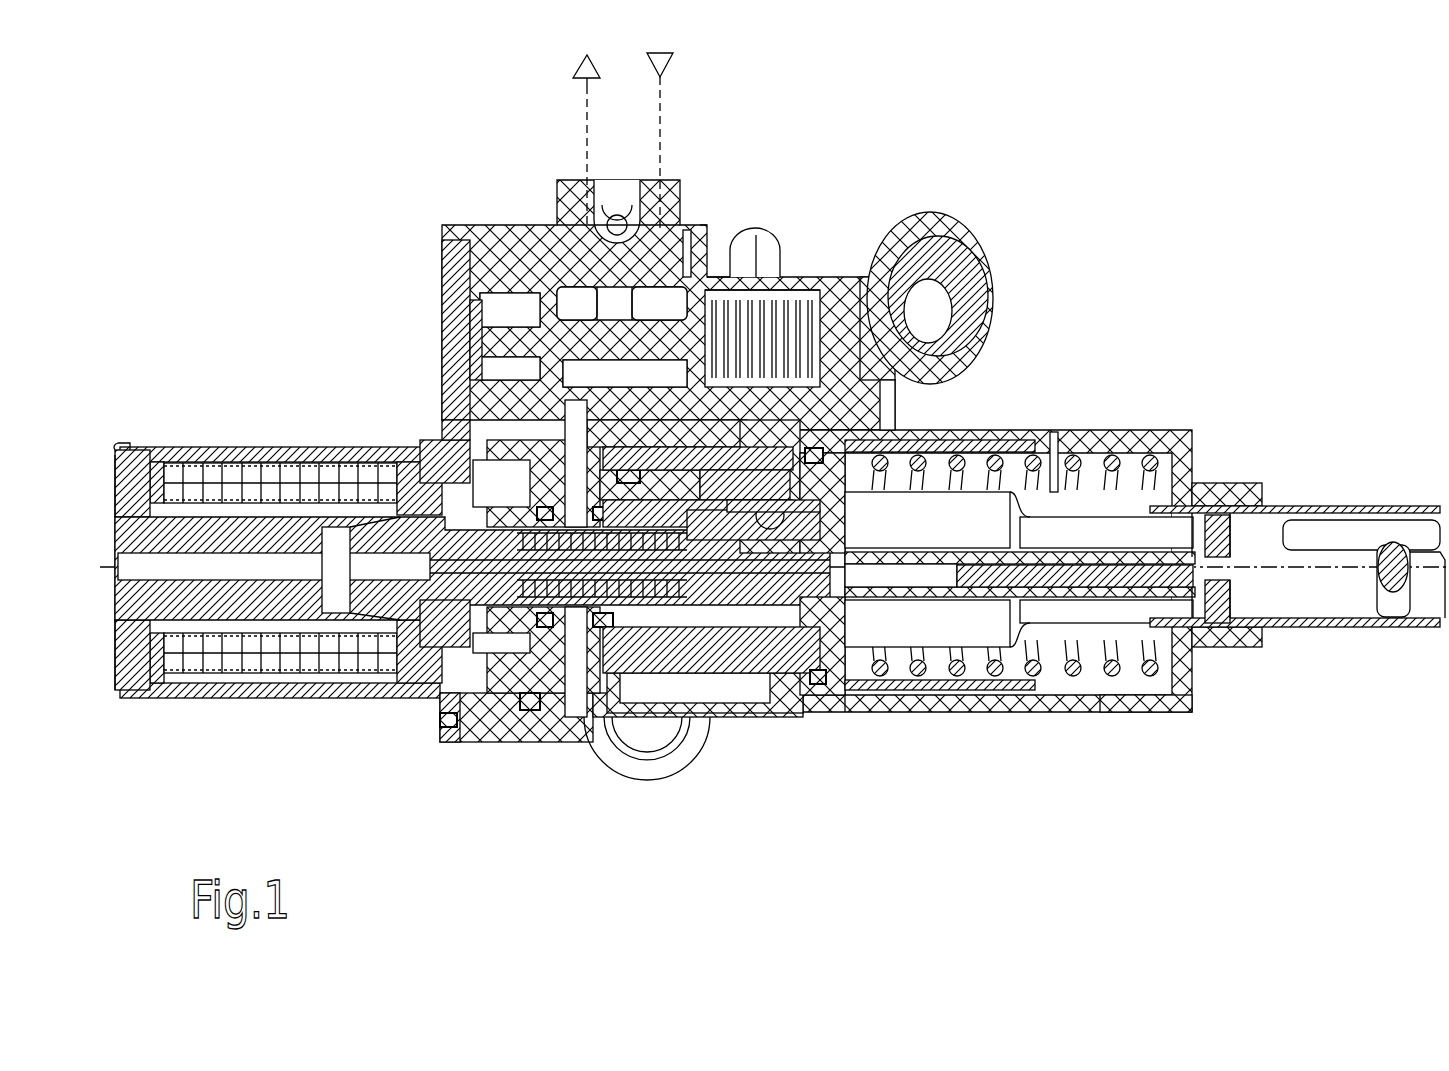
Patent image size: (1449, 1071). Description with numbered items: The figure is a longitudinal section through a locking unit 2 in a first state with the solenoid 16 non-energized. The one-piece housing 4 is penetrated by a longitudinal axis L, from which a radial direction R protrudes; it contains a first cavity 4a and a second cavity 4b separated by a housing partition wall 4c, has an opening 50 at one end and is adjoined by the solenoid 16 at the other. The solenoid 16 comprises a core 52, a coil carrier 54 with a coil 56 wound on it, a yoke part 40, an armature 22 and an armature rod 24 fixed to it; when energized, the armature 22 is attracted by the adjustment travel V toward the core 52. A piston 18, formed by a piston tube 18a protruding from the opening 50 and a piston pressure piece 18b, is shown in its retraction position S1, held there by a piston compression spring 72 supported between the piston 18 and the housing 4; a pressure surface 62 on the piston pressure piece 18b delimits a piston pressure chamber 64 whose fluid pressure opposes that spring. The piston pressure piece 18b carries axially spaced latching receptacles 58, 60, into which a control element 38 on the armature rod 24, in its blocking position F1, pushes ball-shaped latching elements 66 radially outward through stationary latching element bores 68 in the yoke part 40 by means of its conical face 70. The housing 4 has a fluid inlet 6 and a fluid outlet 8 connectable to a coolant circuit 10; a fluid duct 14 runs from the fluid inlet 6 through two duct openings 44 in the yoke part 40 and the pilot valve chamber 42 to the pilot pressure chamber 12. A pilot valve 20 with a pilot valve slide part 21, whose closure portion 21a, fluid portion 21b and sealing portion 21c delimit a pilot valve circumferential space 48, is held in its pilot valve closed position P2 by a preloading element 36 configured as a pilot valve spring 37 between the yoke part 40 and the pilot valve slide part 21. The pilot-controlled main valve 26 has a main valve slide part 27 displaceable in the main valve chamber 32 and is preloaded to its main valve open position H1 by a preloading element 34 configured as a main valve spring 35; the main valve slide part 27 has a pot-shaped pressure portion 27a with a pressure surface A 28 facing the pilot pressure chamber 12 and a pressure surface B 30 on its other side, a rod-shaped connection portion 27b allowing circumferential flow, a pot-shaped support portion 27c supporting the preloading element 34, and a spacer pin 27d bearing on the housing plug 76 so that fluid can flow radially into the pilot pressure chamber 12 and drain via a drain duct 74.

The locking unit 2 is at (1118, 420).
The housing 4 is at (1170, 428).
The first cavity 4a is at (858, 285).
The second cavity 4b is at (1120, 712).
The housing partition wall 4c is at (442, 365).
The fluid inlet 6 is at (693, 228).
The fluid outlet 8 is at (582, 230).
The coolant circuit 10 is at (585, 100).
The pilot pressure chamber 12 is at (565, 362).
The fluid duct 14 is at (442, 410).
The solenoid 16 is at (150, 440).
The piston 18 is at (1307, 506).
The piston tube 18a is at (1350, 506).
The piston pressure piece 18b is at (847, 712).
The pilot valve 20 is at (715, 650).
The pilot valve slide part 21 is at (760, 713).
The closure portion 21a is at (490, 745).
The fluid portion 21b is at (522, 712).
The sealing portion 21c is at (765, 290).
The armature 22 is at (320, 468).
The armature rod 24 is at (353, 485).
The main valve 26 is at (722, 272).
The main valve slide part 27 is at (612, 215).
The pressure portion 27a is at (560, 288).
The connection portion 27b is at (634, 287).
The support portion 27c is at (770, 240).
The spacer pin 27d is at (482, 300).
The pressure surface A 28 is at (510, 355).
The pressure surface B 30 is at (597, 290).
The main valve chamber 32 is at (795, 300).
The preloading element 34 is at (947, 270).
The main valve spring 35 is at (938, 240).
The preloading element 36 is at (551, 690).
The pilot valve spring 37 is at (575, 567).
The control element 38 is at (776, 653).
The yoke part 40 is at (415, 695).
The pilot valve chamber 42 is at (448, 727).
The duct openings 44 is at (440, 440).
The pilot valve circumferential space 48 is at (578, 717).
The opening 50 is at (1262, 500).
The core 52 is at (172, 458).
The coil carrier 54 is at (200, 462).
The coil 56 is at (233, 470).
The latching receptacle 58 is at (625, 660).
The latching receptacle 60 is at (752, 673).
The pressure surface 62 is at (815, 684).
The piston pressure chamber 64 is at (735, 705).
The latching elements 66 is at (904, 405).
The latching element bores 68 is at (892, 452).
The conical face 70 is at (876, 712).
The piston compression spring 72 is at (1055, 432).
The drain duct 74 is at (475, 300).
The housing plug 76 is at (470, 335).
The main valve open position H1 is at (703, 223).
The retraction position S1 is at (1068, 712).
The blocking position F1 is at (602, 565).
The pilot valve closed position P2 is at (652, 650).
The longitudinal axis L is at (1354, 570).
The radial direction R is at (1440, 665).
The adjustment travel V is at (300, 718).